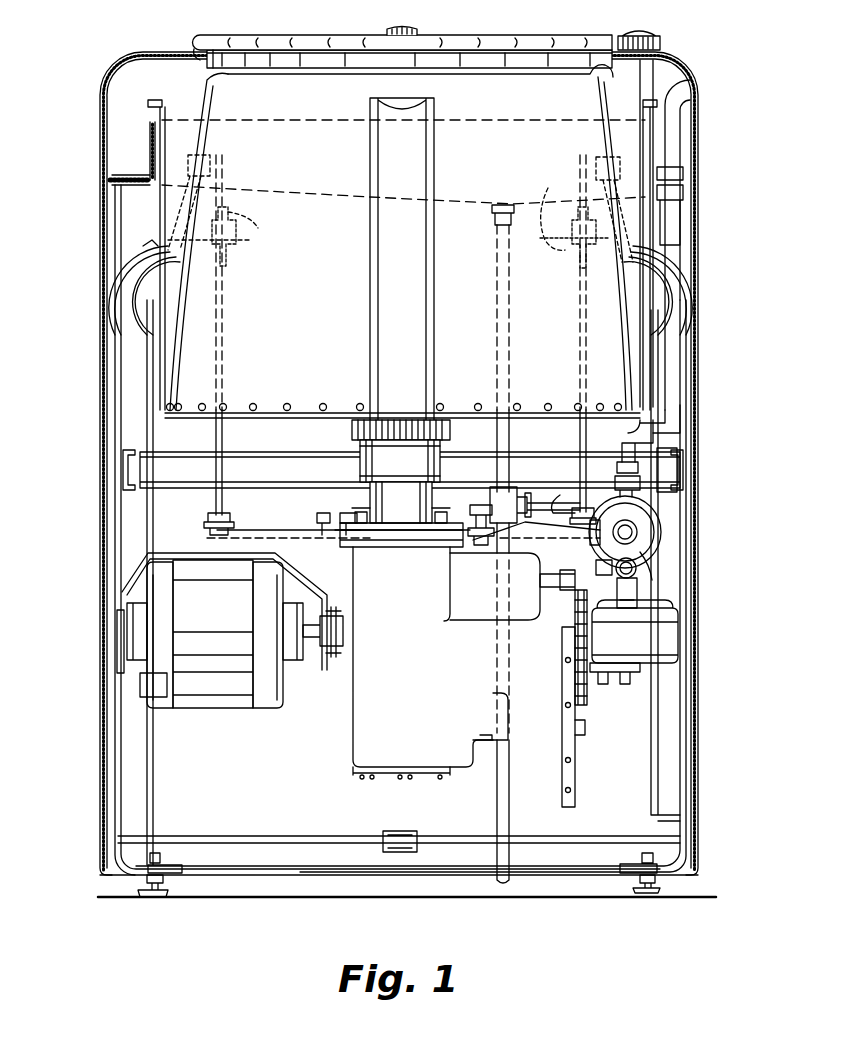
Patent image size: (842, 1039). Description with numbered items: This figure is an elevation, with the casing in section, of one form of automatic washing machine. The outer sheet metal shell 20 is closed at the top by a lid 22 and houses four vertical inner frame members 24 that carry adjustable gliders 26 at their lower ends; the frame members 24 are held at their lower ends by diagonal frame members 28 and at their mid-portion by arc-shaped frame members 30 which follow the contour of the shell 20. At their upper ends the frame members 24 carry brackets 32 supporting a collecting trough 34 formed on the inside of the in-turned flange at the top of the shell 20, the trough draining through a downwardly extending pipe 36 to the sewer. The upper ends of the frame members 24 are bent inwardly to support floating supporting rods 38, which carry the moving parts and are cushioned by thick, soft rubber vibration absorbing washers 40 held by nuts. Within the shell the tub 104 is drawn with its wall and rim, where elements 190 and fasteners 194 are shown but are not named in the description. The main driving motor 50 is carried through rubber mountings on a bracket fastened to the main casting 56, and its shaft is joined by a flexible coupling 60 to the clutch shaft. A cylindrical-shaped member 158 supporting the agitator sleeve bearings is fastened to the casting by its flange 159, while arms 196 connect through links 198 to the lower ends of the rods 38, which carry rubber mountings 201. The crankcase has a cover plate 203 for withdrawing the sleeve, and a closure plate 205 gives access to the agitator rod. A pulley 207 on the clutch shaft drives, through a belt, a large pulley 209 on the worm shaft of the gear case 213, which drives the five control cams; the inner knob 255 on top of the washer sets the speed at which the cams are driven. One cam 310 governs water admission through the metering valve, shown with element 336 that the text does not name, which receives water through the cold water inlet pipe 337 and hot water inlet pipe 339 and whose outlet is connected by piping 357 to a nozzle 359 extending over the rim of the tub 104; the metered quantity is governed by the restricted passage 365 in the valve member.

The outer sheet metal shell 20 is at (115, 545).
The lid 22 is at (188, 42).
The vertical inner frame members 24 is at (122, 752).
The adjustable gliders 26 is at (150, 892).
The diagonal frame members 28 is at (324, 838).
The arc-shaped frame members 30 is at (272, 462).
The brackets 32 is at (152, 244).
The collecting trough 34 is at (150, 165).
The downwardly extending pipe 36 is at (494, 252).
The floating supporting rods 38 is at (224, 300).
The rubber vibration absorbing washers 40 is at (242, 248).
The main driving motor 50 is at (206, 695).
The main casting 56 is at (353, 708).
The flexible coupling 60 is at (320, 670).
The tub 104 is at (322, 345).
The cylindrical-shaped member 158 is at (362, 482).
The flange 159 is at (392, 525).
The tub wall / column 190 is at (178, 200).
The screws 194 is at (358, 404).
The arms 196 is at (466, 520).
The links 198 is at (290, 536).
The rubber mountings 201 is at (207, 526).
The cover plate 203 is at (570, 754).
The closure plate 205 is at (383, 775).
The pulley 207 is at (572, 607).
The large pulley 209 is at (588, 690).
The gear case 213 is at (648, 647).
The inner knob 255 is at (660, 40).
The cam 310 is at (562, 490).
The pump 336 is at (652, 540).
The cold water inlet pipe 337 is at (645, 563).
The hot water inlet pipe 339 is at (634, 531).
The piping 357 is at (678, 310).
The nozzle 359 is at (592, 78).
The restricted passage 365 is at (630, 476).